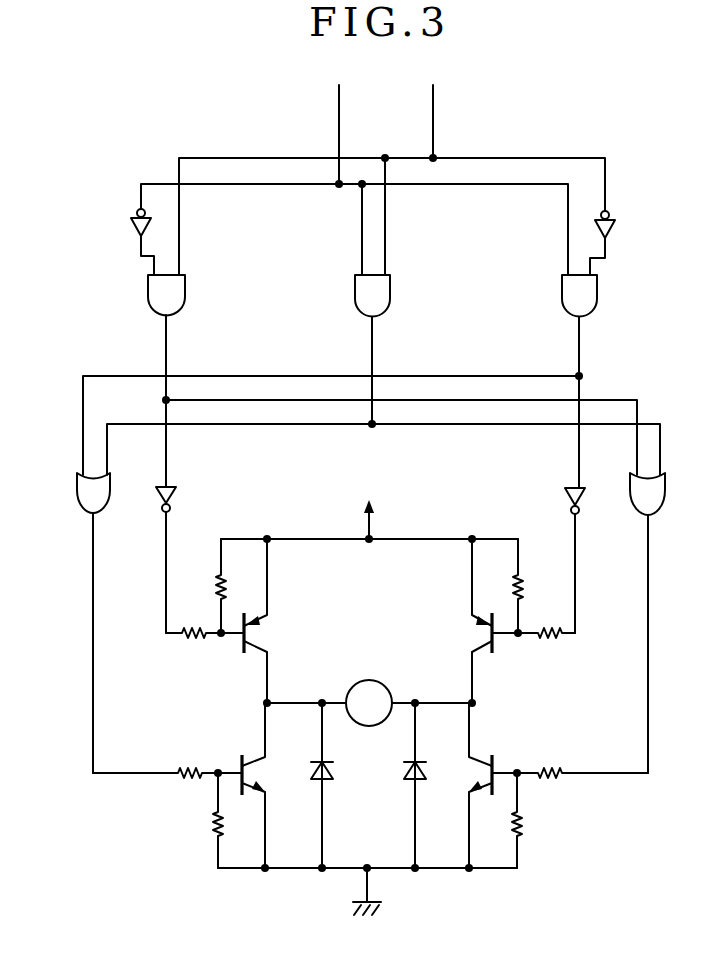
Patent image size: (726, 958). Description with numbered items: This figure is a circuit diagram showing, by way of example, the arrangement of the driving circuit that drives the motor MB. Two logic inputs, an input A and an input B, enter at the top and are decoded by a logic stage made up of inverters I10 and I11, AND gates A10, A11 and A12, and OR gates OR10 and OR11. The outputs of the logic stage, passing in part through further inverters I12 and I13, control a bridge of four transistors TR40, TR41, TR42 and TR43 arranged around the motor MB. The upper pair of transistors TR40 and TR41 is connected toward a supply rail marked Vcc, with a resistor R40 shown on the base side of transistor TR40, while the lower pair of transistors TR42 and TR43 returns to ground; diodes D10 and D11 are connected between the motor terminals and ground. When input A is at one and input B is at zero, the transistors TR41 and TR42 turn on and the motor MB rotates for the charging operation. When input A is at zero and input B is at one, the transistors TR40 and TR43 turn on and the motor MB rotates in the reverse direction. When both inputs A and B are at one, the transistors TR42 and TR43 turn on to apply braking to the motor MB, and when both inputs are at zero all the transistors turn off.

The input A is at (339, 120).
The input B is at (433, 107).
The inverter I10 is at (129, 242).
The inverter I11 is at (612, 243).
The inverter I12 is at (177, 560).
The inverter I13 is at (565, 560).
The AND gate A10 is at (150, 381).
The AND gate A11 is at (360, 349).
The AND gate A12 is at (564, 381).
The OR gate OR10 is at (73, 623).
The OR gate OR11 is at (631, 623).
The supply voltage Vcc is at (369, 505).
The resistor R40 is at (236, 586).
The transistor TR40 is at (233, 621).
The transistor TR41 is at (506, 621).
The transistor TR42 is at (195, 785).
The transistor TR43 is at (542, 785).
The motor MB is at (369, 703).
The diode D10 is at (338, 785).
The diode D11 is at (407, 785).